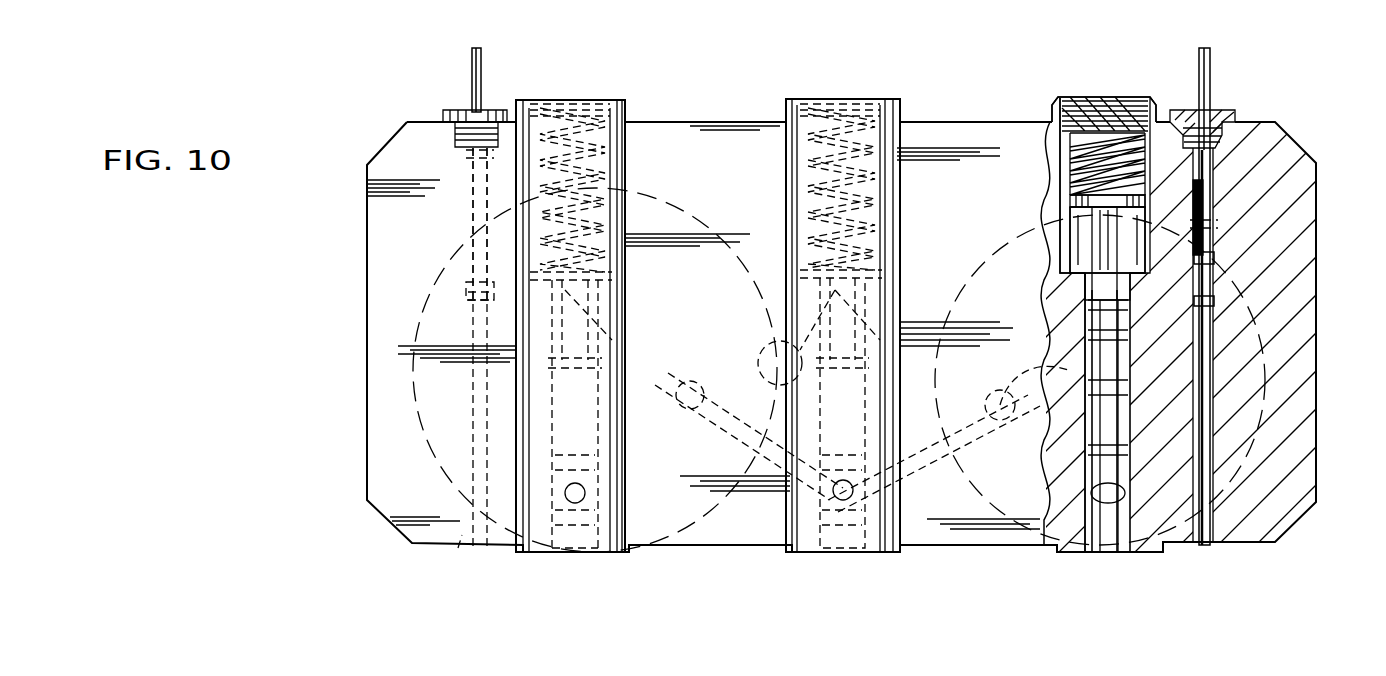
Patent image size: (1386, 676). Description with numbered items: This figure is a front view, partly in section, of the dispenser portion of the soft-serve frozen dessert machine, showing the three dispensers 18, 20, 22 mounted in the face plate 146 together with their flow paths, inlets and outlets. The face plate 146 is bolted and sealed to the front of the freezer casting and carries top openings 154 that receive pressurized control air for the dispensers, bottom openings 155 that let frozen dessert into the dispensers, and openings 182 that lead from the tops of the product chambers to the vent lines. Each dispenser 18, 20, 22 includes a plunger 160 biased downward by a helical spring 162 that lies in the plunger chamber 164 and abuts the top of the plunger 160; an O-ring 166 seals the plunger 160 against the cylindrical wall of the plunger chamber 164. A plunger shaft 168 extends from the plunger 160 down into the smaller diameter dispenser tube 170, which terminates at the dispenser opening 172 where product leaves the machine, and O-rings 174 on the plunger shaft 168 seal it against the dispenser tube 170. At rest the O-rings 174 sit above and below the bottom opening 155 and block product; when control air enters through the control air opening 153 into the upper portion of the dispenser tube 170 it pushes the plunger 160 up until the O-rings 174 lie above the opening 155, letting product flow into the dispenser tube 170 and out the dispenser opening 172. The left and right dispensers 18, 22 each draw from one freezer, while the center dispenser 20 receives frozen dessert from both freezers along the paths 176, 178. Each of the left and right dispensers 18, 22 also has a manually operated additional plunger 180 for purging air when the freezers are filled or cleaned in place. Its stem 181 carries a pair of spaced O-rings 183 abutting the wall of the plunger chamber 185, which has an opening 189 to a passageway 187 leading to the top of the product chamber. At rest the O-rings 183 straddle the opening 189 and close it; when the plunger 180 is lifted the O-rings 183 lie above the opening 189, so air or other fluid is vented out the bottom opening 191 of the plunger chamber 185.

The left dispensing nozzle 18 is at (522, 100).
The center dispensing nozzle 20 is at (786, 108).
The right dispensing nozzle 22 is at (1060, 120).
The face plate 146 is at (402, 138).
The control air opening 153 is at (610, 312).
The top opening 154 is at (600, 100).
The bottom opening 155 is at (757, 365).
The plunger 160 is at (605, 272).
The helical spring 162 is at (622, 150).
The plunger chamber 164 is at (1075, 245).
The O-ring 166 is at (1065, 193).
The plunger shaft 168 is at (1084, 290).
The dispenser tube 170 is at (587, 553).
The dispenser opening 172 is at (567, 553).
The O-rings 174 is at (1060, 362).
The flow path 176 is at (700, 456).
The flow path 178 is at (940, 453).
The additional plunger 180 is at (472, 50).
The stem 181 is at (473, 88).
The vent opening 182 is at (468, 217).
The O-rings 183 is at (1212, 252).
The plunger chamber 185 is at (1240, 160).
The passageway 187 is at (478, 326).
The opening 189 is at (453, 256).
The bottom opening 191 is at (460, 537).